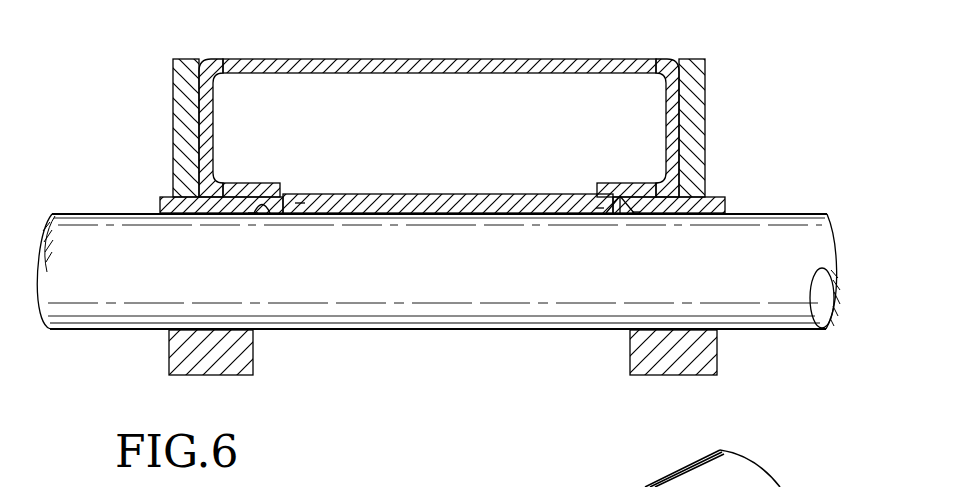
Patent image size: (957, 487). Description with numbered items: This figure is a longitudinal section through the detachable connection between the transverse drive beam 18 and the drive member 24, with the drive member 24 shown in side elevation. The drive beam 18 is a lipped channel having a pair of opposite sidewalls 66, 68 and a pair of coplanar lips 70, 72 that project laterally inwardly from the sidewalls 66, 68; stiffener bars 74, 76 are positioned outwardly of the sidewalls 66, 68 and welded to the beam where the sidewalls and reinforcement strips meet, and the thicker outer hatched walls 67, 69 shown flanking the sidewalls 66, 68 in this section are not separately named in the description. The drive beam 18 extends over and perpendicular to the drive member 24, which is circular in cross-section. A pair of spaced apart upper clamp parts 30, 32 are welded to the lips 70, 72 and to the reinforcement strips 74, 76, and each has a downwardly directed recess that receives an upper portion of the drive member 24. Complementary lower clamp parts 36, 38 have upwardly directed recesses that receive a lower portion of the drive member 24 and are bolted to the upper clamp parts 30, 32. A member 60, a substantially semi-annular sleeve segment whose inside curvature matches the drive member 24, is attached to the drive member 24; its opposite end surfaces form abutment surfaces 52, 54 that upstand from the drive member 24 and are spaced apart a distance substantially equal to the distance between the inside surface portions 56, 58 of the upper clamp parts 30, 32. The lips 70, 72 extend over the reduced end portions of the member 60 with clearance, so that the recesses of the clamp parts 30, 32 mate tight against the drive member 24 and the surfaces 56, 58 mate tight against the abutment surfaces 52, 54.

The transverse drive beam 18 is at (467, 59).
The drive member 24 is at (476, 312).
The upper clamp part 30 is at (160, 197).
The upper clamp part 32 is at (725, 200).
The lower clamp part 36 is at (221, 358).
The lower clamp part 38 is at (710, 366).
The abutment surface 52 is at (253, 214).
The abutment surface 54 is at (636, 212).
The inside surface portion 56 is at (262, 213).
The inside surface portion 58 is at (617, 208).
The member 60 is at (453, 193).
The sidewall 66 is at (207, 126).
The left cap wall 67 is at (182, 118).
The sidewall 68 is at (668, 106).
The right cap wall 69 is at (692, 117).
The lip 70 is at (274, 184).
The lip 72 is at (604, 183).
The stiffener bar 74 is at (300, 204).
The stiffener bar 76 is at (600, 208).